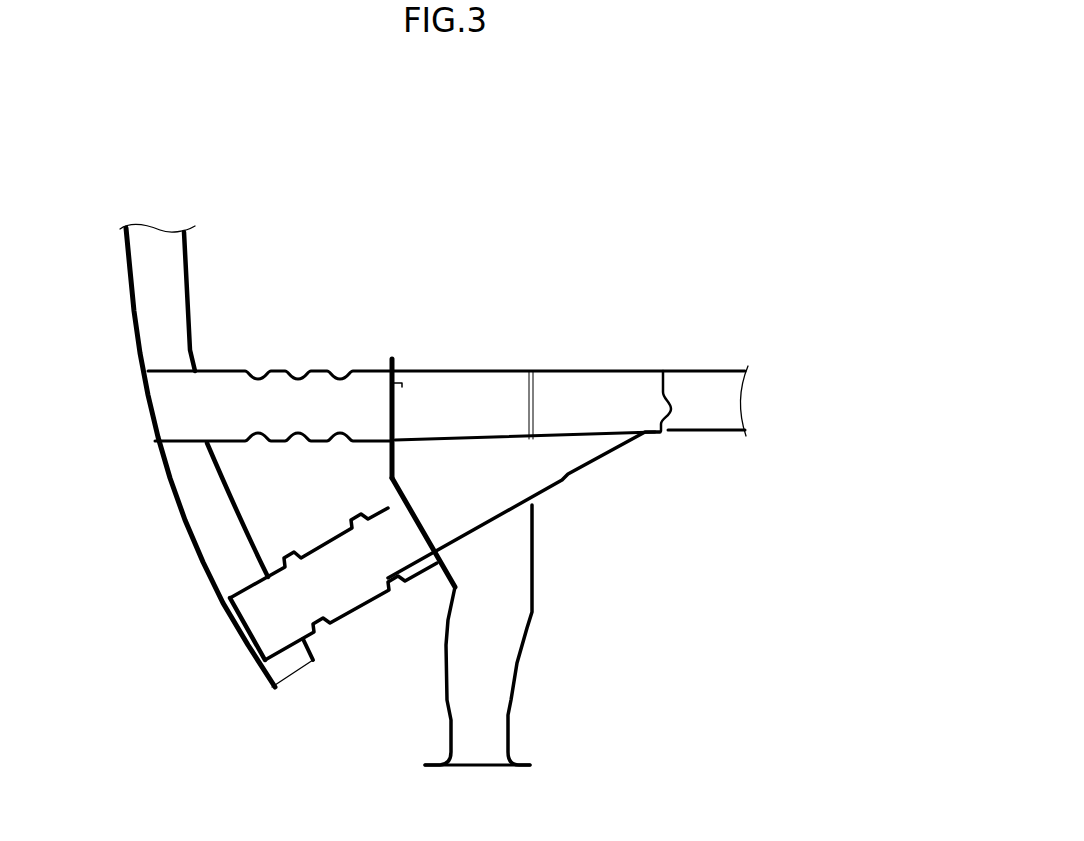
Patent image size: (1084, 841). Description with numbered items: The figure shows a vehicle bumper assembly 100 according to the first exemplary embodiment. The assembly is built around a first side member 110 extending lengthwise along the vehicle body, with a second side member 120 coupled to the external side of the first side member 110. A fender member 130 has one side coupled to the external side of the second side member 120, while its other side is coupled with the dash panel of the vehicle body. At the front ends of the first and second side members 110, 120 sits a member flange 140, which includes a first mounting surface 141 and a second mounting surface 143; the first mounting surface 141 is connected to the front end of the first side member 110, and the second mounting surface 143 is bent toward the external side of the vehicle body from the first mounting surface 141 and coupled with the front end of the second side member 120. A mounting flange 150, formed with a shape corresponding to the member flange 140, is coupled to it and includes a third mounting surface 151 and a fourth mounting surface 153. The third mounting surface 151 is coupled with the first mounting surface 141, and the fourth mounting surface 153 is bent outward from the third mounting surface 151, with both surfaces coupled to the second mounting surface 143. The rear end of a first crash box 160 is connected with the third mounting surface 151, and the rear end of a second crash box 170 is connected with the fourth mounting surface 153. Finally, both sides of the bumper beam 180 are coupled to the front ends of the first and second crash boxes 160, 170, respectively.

The vehicle bumper assembly 100 is at (449, 183).
The first side member 110 is at (500, 388).
The second side member 120 is at (545, 462).
The fender member 130 is at (508, 613).
The member flange 140 is at (467, 304).
The first mounting surface 141 is at (398, 388).
The second mounting surface 143 is at (421, 515).
The mounting flange 150 is at (373, 302).
The third mounting surface 151 is at (390, 429).
The fourth mounting surface 153 is at (410, 520).
The first crash box 160 is at (260, 403).
The second crash box 170 is at (333, 587).
The bumper beam 180 is at (186, 480).